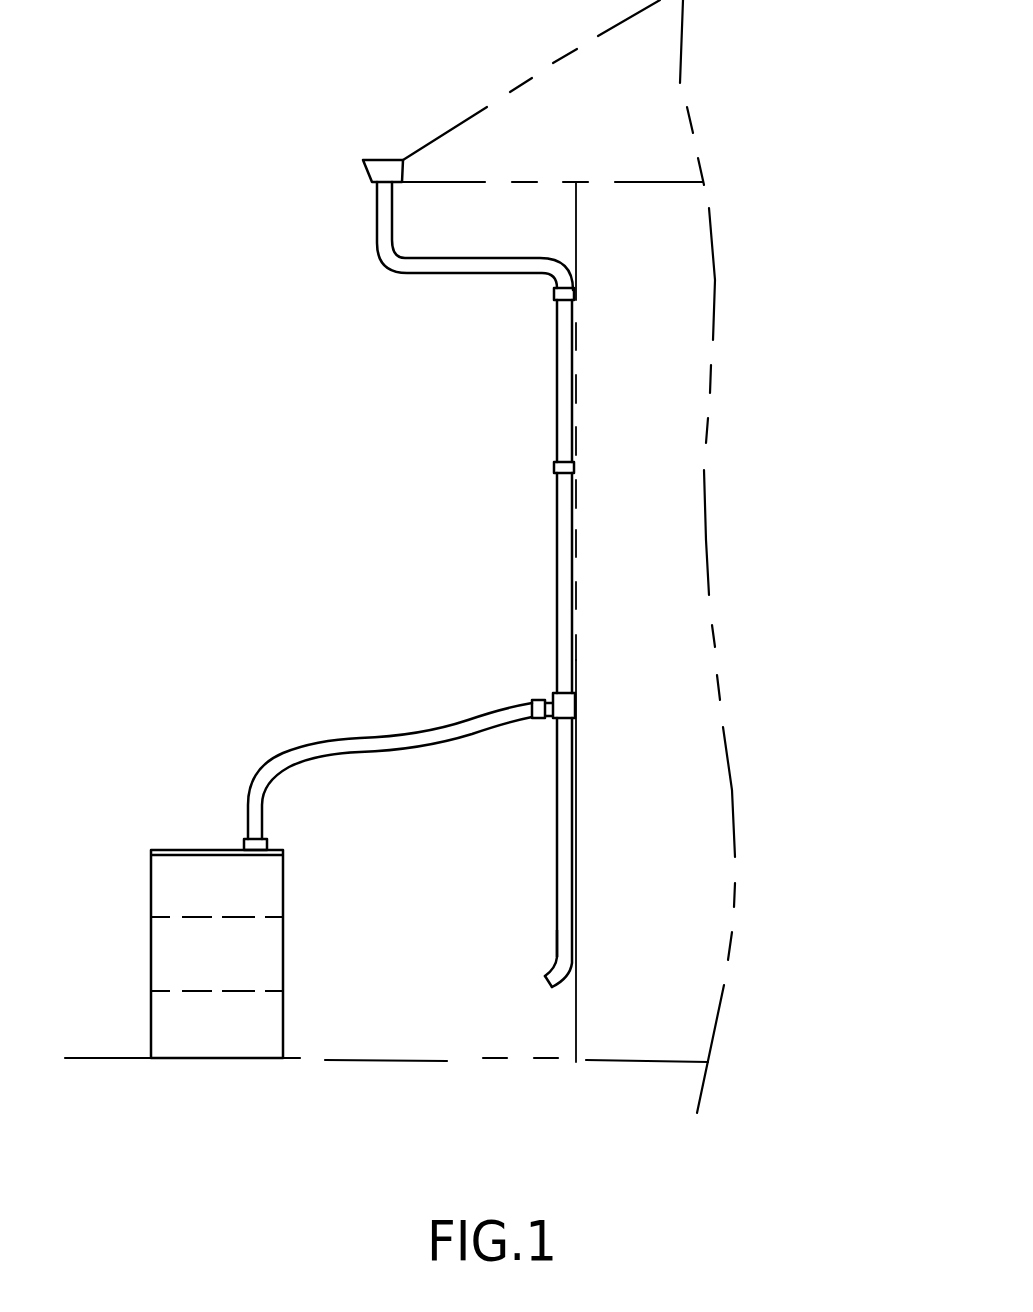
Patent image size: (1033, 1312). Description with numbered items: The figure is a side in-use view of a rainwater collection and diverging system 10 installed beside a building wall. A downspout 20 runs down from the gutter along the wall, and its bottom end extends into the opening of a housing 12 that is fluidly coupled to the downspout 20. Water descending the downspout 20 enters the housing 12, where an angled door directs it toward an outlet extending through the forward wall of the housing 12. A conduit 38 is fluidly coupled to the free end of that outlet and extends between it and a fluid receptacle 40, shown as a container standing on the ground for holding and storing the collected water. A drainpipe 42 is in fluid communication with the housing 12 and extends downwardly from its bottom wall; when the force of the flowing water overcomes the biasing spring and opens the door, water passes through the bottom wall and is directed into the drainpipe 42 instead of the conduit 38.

The rainwater collection and diverging system 10 is at (298, 535).
The housing 12 is at (565, 710).
The downspout 20 is at (565, 602).
The conduit 38 is at (352, 738).
The fluid receptacle 40 is at (151, 889).
The drainpipe 42 is at (558, 930).